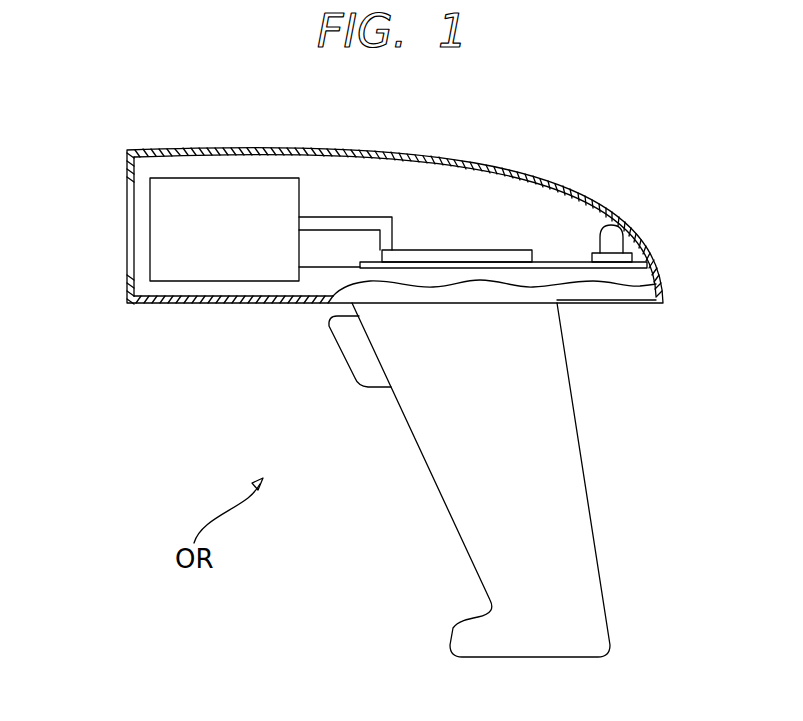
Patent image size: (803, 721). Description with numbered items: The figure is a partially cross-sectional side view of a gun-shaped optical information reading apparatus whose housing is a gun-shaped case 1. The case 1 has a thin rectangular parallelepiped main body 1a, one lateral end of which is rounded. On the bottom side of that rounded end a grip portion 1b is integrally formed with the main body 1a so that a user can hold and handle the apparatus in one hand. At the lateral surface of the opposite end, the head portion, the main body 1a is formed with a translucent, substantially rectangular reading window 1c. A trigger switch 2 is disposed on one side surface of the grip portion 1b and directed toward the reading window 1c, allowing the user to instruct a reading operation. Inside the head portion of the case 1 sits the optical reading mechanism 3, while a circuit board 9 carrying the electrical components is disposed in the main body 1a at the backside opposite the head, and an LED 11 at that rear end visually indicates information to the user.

The gun-shaped case 1 is at (497, 148).
The main body 1a is at (397, 150).
The grip portion 1b is at (570, 497).
The reading window 1c is at (130, 262).
The trigger switch 2 is at (355, 350).
The reading mechanism 3 is at (233, 178).
The circuit board 9 is at (562, 262).
The LED 11 is at (612, 231).